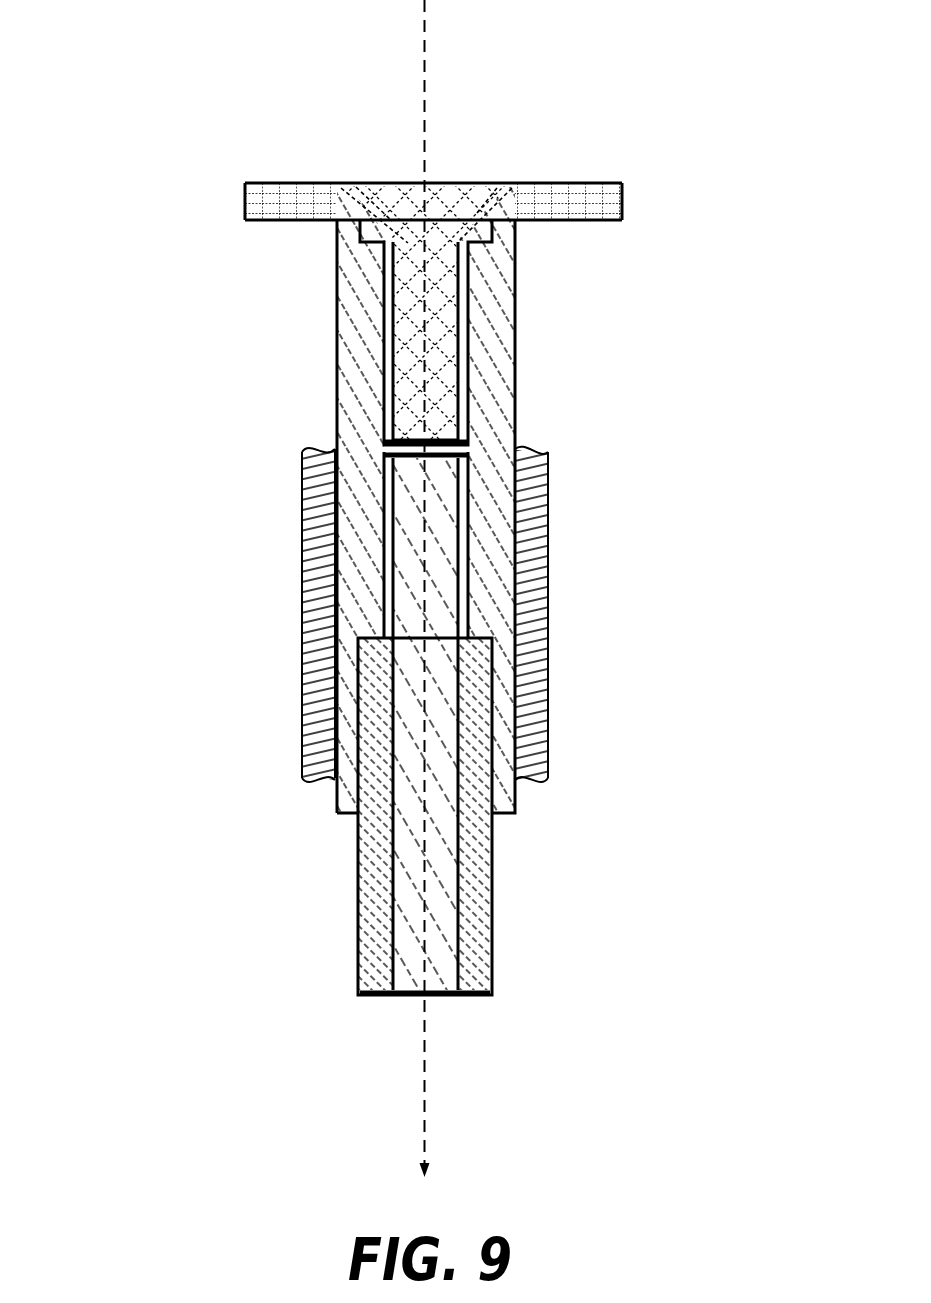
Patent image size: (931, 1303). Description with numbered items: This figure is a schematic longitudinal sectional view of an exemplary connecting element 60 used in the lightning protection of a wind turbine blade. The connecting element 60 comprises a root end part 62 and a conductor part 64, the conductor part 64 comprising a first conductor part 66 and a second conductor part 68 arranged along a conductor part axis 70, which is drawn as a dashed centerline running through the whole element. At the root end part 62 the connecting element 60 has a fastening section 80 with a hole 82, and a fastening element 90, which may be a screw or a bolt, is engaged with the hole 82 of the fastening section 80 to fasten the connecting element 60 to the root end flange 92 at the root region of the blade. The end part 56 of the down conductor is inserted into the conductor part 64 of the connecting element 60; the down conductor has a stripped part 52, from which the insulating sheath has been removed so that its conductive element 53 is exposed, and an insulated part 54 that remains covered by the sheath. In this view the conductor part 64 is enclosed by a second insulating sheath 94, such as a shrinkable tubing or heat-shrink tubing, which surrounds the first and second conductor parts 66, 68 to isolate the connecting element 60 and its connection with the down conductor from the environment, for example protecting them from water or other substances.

The connecting element 60 is at (183, 662).
The root end flange 92 is at (551, 186).
The fastening element 90 is at (453, 212).
The fastening section 80 is at (408, 236).
The hole 82 is at (390, 268).
The root end part 62 is at (498, 370).
The first conductor part 66 is at (367, 550).
The second conductor part 68 is at (350, 757).
The conductor part 64 is at (502, 622).
The stripped part 52 is at (448, 530).
The second insulating sheath 94 is at (318, 590).
The end part of the down conductor 56 is at (452, 711).
The conductive element 53 is at (412, 857).
The insulated part 54 is at (475, 880).
The conductor part axis 70 is at (423, 1075).